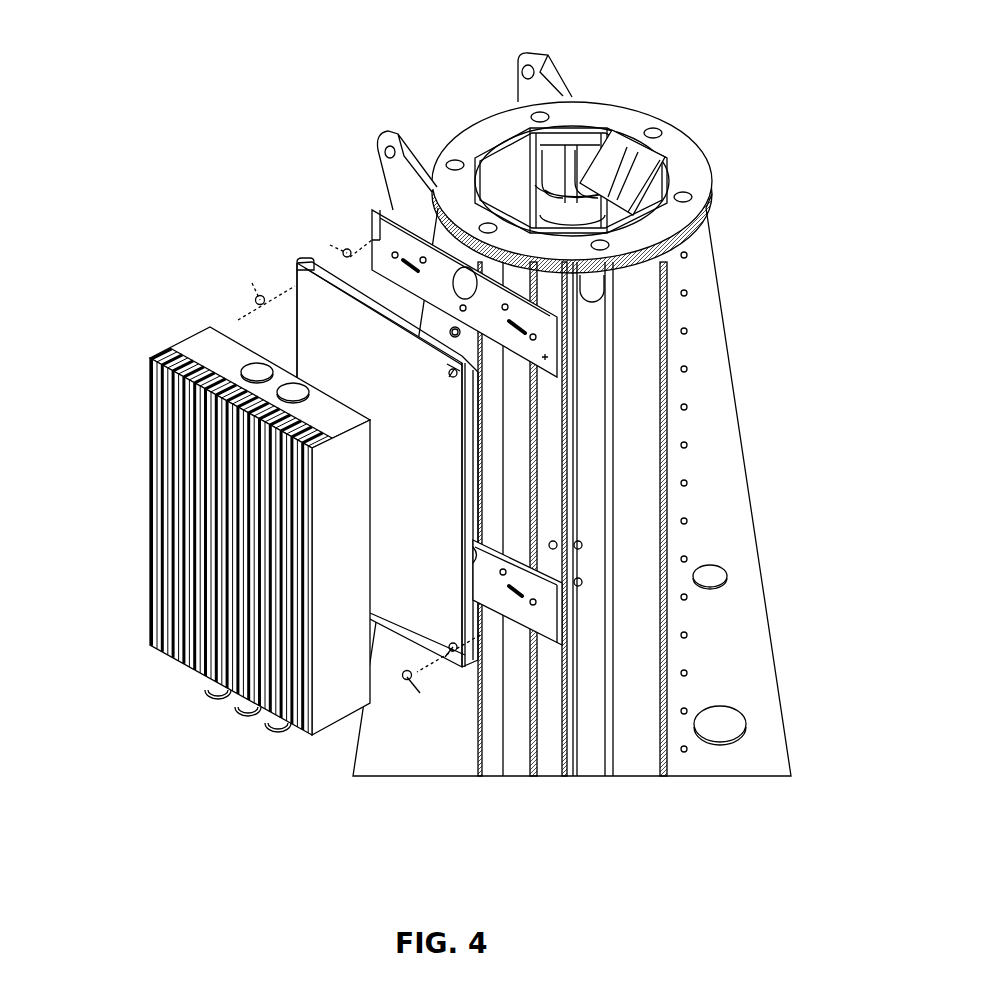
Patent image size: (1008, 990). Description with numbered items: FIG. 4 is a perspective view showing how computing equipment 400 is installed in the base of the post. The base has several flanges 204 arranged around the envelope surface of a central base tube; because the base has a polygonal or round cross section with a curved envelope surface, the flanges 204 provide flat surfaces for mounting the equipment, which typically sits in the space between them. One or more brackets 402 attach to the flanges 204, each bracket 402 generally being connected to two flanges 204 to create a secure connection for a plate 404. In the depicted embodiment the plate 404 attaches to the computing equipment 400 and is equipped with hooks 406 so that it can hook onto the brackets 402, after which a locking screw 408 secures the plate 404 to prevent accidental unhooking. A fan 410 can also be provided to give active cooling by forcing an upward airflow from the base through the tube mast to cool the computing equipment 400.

The flange 204 is at (728, 385).
The computing equipment 400 is at (150, 362).
The bracket 402 is at (372, 232).
The plate 404 is at (310, 293).
The hook 406 is at (533, 602).
The locking screw 408 is at (403, 677).
The fan 410 is at (630, 143).